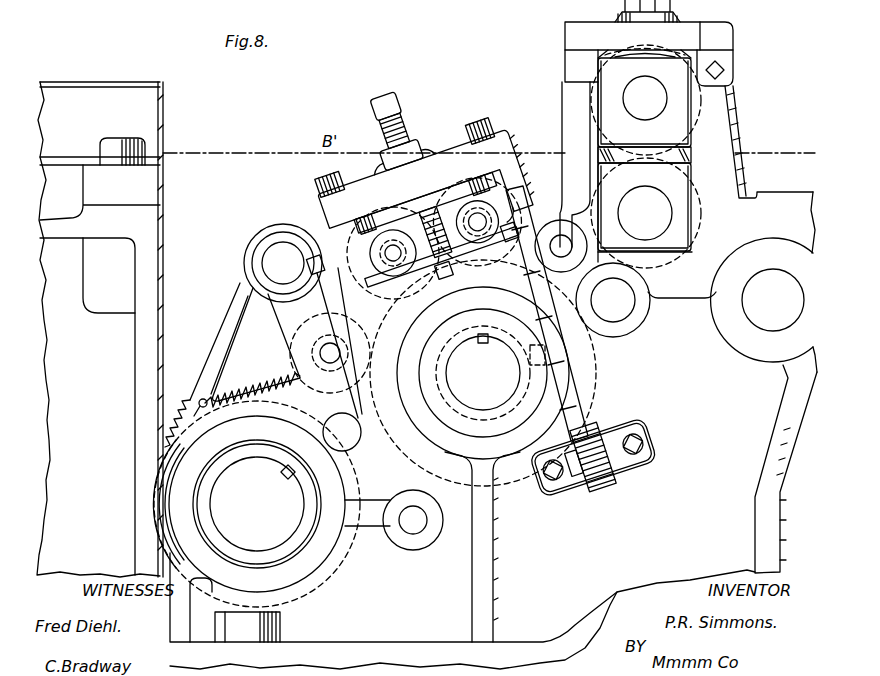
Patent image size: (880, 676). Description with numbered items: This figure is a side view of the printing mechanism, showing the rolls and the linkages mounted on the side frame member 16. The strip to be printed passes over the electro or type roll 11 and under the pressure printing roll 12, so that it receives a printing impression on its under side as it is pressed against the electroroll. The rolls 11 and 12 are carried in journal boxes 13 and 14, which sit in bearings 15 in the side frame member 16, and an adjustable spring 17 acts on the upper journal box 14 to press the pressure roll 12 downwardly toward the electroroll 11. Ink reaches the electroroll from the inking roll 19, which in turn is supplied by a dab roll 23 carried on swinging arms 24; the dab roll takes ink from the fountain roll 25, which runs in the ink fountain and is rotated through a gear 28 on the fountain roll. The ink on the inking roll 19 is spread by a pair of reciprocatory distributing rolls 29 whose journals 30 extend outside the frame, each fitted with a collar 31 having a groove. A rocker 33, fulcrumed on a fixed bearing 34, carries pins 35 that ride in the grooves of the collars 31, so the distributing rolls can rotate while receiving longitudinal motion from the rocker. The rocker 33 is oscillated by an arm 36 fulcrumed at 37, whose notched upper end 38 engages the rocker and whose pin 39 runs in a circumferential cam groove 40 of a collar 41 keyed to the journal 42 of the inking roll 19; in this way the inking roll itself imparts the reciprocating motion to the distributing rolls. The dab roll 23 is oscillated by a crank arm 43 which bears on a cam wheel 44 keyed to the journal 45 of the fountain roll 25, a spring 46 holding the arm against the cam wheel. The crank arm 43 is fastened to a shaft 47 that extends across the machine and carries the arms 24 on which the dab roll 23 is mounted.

The electro or type roll 11 is at (672, 292).
The pressure printing roll 12 is at (647, 152).
The journal box 13 is at (675, 186).
The upper journal box 14 is at (683, 117).
The bearing 15 is at (578, 140).
The side frame member 16 is at (740, 469).
The adjustable spring 17 is at (687, 50).
The inking roll 19 is at (408, 460).
The dab roll 23 is at (370, 386).
The swinging arms 24 is at (318, 347).
The fountain roll 25 is at (350, 558).
The gear 28 is at (170, 445).
The reciprocatory distributing rolls 29 is at (384, 256).
The journal 30 is at (440, 284).
The collar 31 is at (377, 268).
The rocker 33 is at (412, 228).
The fixed bearing 34 is at (432, 228).
The pins 35 is at (360, 227).
The arm 36 is at (588, 355).
The fulcrum 37 is at (641, 416).
The notched upper end 38 is at (524, 226).
The pin 39 is at (483, 372).
The circumferential cam groove 40 is at (518, 484).
The collar 41 is at (477, 433).
The journal 42 is at (483, 373).
The crank arm 43 is at (284, 344).
The cam wheel 44 is at (320, 562).
The journal 45 is at (282, 537).
The spring 46 is at (273, 395).
The shaft 47 is at (282, 264).